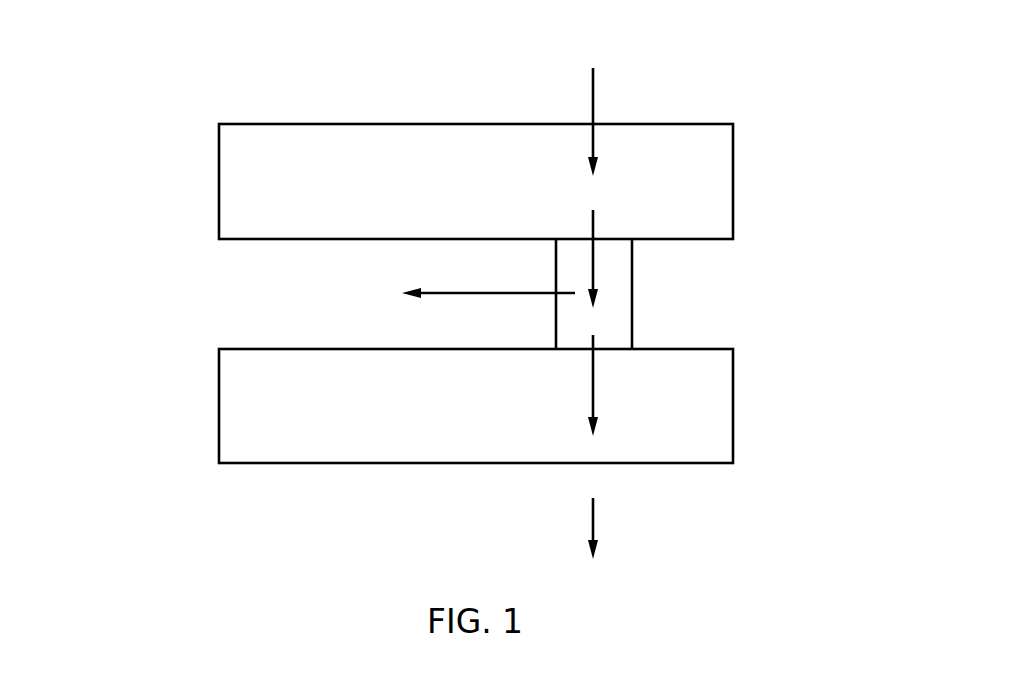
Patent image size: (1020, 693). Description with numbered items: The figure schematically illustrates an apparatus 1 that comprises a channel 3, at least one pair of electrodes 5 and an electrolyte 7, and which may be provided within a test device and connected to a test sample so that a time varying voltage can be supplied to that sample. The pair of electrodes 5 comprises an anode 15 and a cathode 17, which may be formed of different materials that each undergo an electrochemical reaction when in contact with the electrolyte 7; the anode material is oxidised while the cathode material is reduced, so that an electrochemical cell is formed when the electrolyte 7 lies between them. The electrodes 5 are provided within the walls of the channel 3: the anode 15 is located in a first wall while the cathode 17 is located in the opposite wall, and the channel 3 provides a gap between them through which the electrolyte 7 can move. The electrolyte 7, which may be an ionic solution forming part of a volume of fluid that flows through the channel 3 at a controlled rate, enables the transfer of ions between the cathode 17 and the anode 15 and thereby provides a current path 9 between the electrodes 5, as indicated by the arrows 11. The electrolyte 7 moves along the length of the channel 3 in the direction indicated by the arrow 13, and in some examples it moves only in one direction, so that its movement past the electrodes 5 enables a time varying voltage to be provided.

The apparatus 1 is at (741, 113).
The channel 3 is at (741, 285).
The pair of electrodes 5 is at (252, 221).
The electrolyte 7 is at (633, 318).
The current path 9 is at (600, 518).
The arrows 11 is at (600, 92).
The arrow 13 is at (455, 292).
The anode 15 is at (297, 450).
The cathode 17 is at (290, 137).